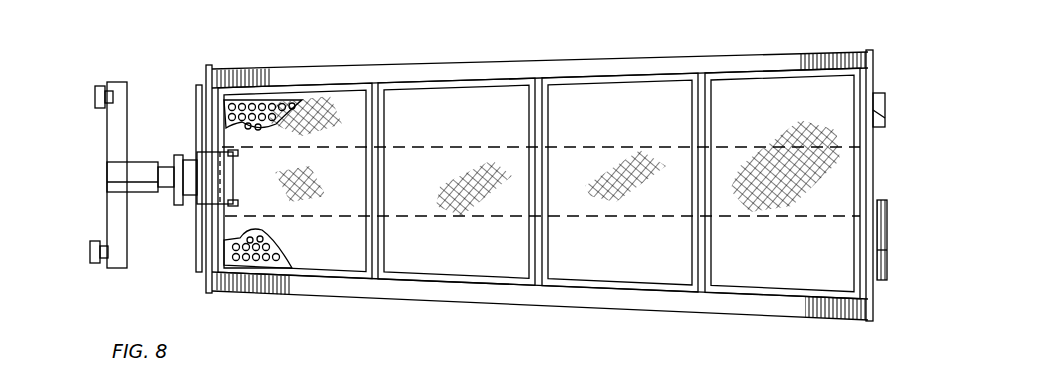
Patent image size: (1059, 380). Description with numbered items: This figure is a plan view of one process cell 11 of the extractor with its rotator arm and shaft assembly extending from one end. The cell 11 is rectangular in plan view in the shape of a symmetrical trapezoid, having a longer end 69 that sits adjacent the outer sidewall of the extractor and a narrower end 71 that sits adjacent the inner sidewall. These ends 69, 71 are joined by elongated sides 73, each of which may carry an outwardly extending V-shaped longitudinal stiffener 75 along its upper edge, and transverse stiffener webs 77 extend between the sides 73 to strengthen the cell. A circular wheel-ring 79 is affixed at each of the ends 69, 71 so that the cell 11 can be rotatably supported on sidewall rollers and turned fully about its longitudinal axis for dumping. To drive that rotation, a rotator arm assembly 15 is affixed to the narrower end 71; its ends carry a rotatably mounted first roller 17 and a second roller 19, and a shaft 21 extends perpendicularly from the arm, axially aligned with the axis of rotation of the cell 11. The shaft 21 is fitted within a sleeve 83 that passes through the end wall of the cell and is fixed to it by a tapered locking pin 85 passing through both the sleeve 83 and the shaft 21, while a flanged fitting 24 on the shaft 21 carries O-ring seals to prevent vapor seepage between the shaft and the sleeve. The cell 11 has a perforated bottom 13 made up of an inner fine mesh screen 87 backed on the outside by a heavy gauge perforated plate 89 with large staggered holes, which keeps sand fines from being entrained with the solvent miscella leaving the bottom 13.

The process cell 11 is at (562, 46).
The perforated bottom 13 is at (440, 188).
The rotator arm assembly 15 is at (118, 82).
The first roller 17 is at (94, 100).
The second roller 19 is at (90, 252).
The shaft 21 is at (143, 172).
The flanged fitting 24 is at (178, 155).
The longer end 69 is at (874, 78).
The narrower end 71 is at (196, 150).
The elongated sides 73 is at (466, 80).
The longitudinal stiffener 75 is at (380, 68).
The transverse stiffener webs 77 is at (543, 262).
The wheel-ring 79 is at (197, 242).
The sleeve 83 is at (240, 158).
The tapered locking pin 85 is at (234, 202).
The fine mesh screen 87 is at (306, 105).
The perforated plate 89 is at (243, 100).